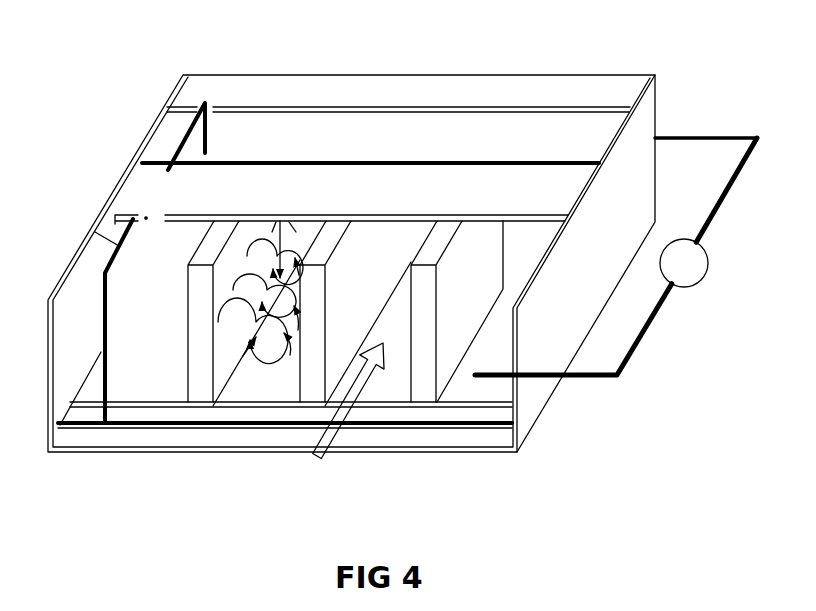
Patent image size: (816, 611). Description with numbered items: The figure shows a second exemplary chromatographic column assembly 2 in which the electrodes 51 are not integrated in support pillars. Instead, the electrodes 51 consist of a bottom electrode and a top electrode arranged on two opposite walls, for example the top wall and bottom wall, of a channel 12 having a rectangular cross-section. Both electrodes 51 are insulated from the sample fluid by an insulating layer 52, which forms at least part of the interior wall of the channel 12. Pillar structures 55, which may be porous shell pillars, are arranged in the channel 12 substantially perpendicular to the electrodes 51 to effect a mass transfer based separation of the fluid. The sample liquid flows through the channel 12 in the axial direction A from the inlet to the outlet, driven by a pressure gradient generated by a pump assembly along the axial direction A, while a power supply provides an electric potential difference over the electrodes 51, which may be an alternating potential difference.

The chromatographic column assembly 2 is at (53, 133).
The electrodes 51 is at (568, 142).
The insulating layer 52 is at (372, 183).
The pillar structures 55 is at (222, 222).
The channel 12 is at (272, 347).
The axial direction A is at (341, 420).